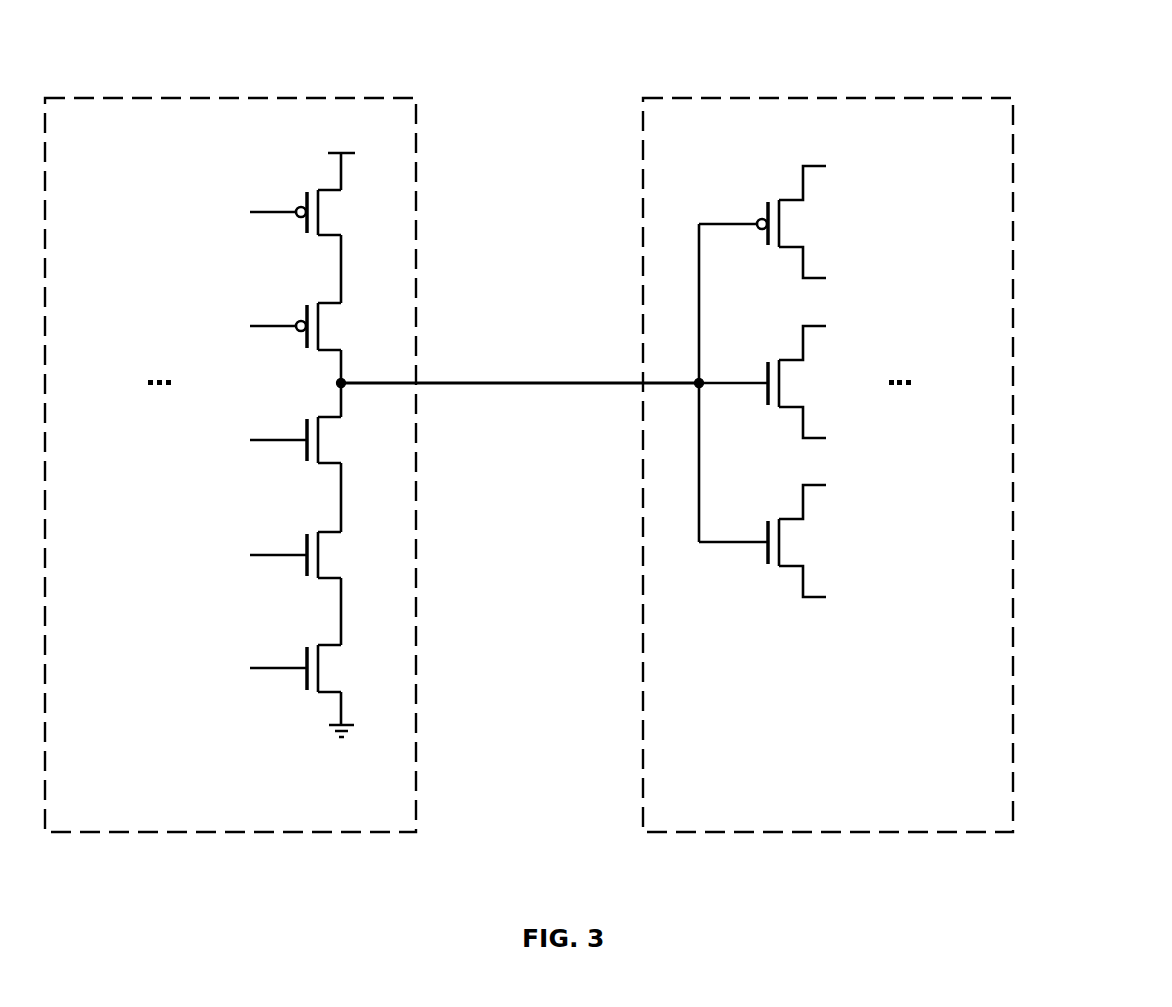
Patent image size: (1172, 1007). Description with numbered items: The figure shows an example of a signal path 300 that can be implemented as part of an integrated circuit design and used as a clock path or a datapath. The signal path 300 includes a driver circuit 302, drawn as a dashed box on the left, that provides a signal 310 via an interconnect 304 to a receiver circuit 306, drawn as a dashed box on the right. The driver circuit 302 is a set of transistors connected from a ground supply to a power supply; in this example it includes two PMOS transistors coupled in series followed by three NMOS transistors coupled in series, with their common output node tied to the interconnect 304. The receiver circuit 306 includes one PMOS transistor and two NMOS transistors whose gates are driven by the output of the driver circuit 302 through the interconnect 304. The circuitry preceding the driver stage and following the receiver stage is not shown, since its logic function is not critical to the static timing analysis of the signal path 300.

The signal path 300 is at (1079, 121).
The driver circuit 302 is at (230, 465).
The interconnect 304 is at (523, 383).
The receiver circuit 306 is at (828, 465).
The signal 310 is at (460, 400).